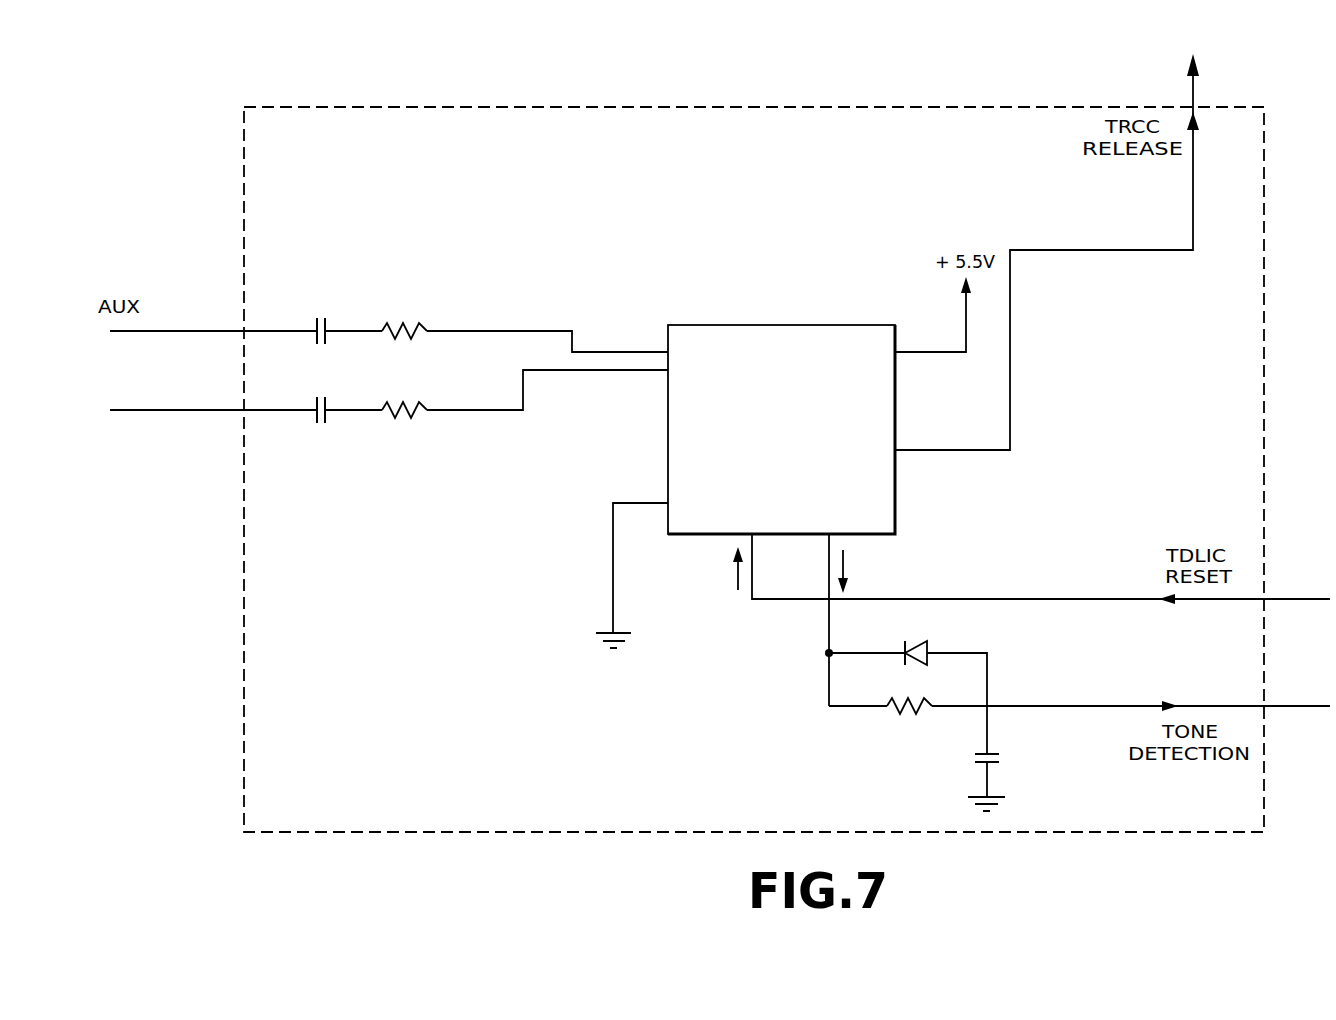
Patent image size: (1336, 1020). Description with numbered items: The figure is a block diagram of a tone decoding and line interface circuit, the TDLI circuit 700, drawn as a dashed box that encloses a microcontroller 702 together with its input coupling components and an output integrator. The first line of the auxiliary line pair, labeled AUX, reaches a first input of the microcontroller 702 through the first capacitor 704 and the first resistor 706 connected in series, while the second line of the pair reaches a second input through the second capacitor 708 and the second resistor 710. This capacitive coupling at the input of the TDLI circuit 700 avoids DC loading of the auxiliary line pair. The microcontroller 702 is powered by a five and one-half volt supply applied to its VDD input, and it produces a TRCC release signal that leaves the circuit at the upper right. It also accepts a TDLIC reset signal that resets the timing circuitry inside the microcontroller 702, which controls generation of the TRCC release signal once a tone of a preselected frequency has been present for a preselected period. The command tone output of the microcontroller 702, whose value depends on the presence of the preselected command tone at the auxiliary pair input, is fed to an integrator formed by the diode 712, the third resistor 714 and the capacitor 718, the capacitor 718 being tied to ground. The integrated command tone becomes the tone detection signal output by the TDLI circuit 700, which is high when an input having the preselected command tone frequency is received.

The TDLI circuit 700 is at (1003, 107).
The microcontroller 702 is at (826, 324).
The first capacitor 704 is at (327, 320).
The first resistor 706 is at (423, 326).
The second capacitor 708 is at (327, 399).
The second resistor 710 is at (423, 405).
The diode 712 is at (925, 640).
The third resistor 714 is at (901, 712).
The capacitor 718 is at (993, 756).